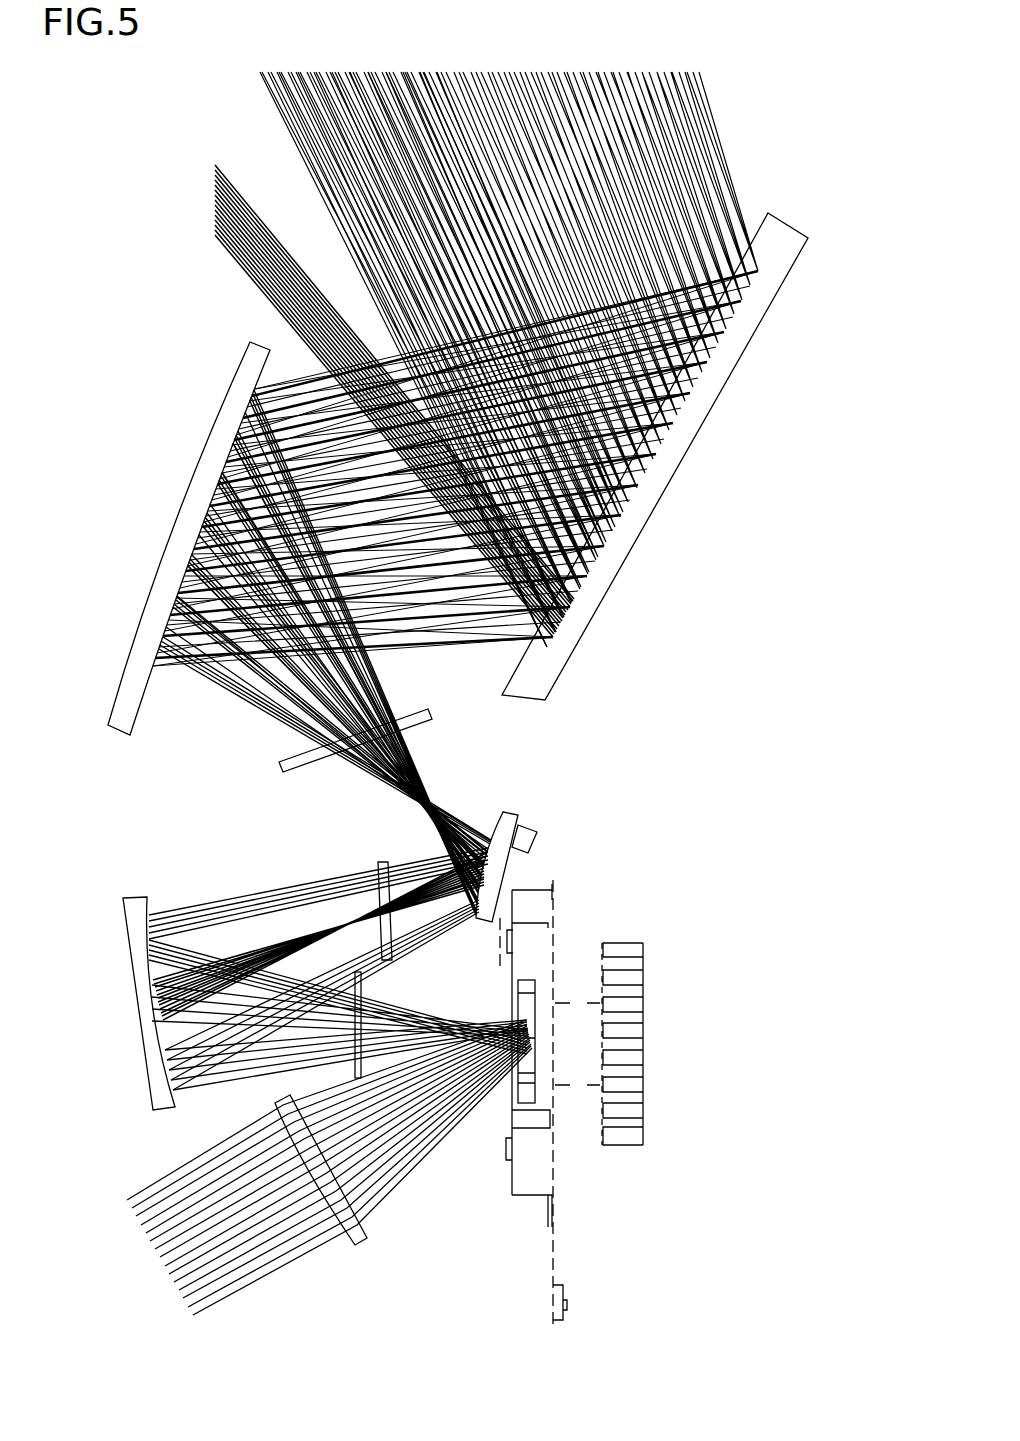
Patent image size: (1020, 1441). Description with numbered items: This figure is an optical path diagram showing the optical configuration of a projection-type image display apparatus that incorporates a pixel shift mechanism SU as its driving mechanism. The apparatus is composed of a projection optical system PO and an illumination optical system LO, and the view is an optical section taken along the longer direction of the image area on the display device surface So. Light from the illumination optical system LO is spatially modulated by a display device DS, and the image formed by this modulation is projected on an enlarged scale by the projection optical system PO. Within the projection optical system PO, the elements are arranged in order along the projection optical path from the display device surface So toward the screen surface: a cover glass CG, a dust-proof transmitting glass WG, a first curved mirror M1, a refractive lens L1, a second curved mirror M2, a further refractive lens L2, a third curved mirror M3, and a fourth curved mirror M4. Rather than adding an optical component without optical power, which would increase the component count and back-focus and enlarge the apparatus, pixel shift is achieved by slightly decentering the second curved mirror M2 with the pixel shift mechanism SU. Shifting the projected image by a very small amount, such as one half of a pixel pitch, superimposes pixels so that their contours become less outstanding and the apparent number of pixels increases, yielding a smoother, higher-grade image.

The projection optical system PO is at (712, 624).
The first curved mirror M1 is at (147, 897).
The second curved mirror M2 is at (505, 812).
The third curved mirror M3 is at (130, 727).
The fourth curved mirror M4 is at (557, 682).
The refractive lens L1 is at (380, 867).
The refractive lens L2 is at (283, 768).
The illumination optical system LO is at (362, 1232).
The dust-proof transmitting glass WG is at (363, 978).
The pixel shift mechanism SU is at (537, 838).
The display device surface So is at (530, 1025).
The display device DS is at (542, 1063).
The cover glass CG is at (512, 1097).